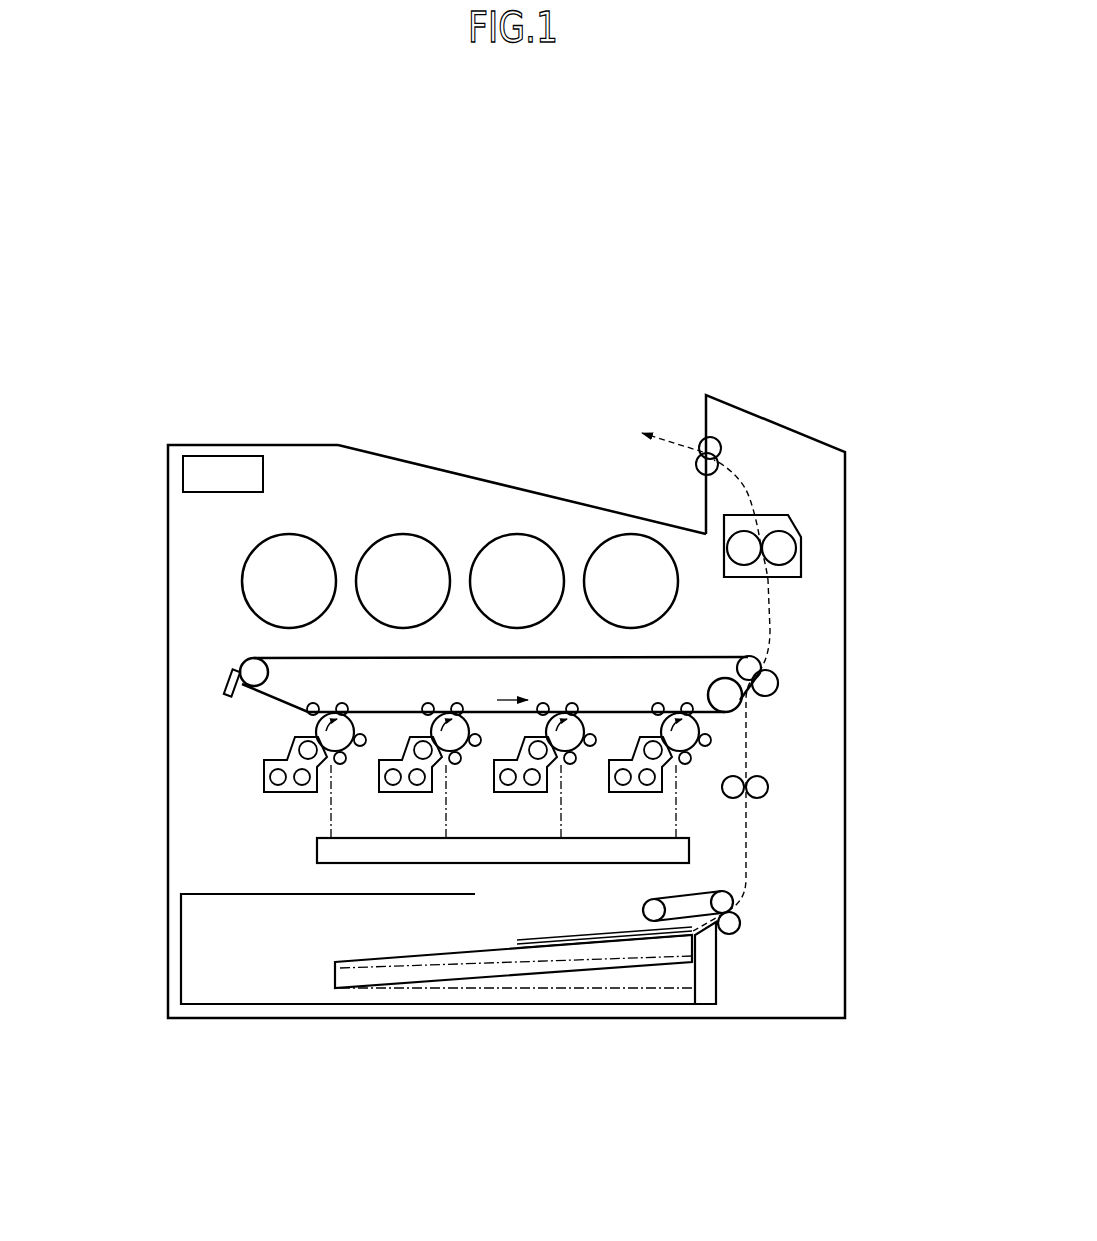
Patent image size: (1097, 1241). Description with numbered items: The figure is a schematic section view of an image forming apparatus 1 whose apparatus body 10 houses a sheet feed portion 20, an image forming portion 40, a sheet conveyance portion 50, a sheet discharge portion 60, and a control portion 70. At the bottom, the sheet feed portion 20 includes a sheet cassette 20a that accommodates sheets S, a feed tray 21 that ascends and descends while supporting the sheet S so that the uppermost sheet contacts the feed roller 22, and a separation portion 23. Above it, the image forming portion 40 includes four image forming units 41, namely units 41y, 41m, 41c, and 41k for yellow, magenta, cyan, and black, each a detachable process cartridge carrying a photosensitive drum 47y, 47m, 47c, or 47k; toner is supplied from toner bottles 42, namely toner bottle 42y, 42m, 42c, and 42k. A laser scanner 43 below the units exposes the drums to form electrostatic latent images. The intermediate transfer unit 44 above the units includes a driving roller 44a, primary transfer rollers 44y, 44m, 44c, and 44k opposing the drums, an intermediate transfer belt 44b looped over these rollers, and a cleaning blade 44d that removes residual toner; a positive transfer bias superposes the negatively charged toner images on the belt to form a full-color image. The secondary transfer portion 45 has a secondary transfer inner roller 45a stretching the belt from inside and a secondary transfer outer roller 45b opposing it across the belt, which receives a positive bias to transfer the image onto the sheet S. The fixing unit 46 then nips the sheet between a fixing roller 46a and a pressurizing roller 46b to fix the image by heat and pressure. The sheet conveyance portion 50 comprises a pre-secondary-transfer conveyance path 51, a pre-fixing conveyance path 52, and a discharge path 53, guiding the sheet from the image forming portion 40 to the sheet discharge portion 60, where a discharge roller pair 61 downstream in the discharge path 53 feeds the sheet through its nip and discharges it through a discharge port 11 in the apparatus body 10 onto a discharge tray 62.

The image forming apparatus 1 is at (748, 338).
The apparatus body 10 is at (845, 572).
The discharge port 11 is at (696, 442).
The sheet feed portion 20 is at (487, 1000).
The sheet cassette 20a is at (243, 1006).
The feed tray 21 is at (455, 962).
The feed roller 22 is at (642, 910).
The separation portion 23 is at (742, 952).
The sheet S is at (560, 938).
The image forming portion 40 is at (438, 680).
The image forming units 41 is at (449, 763).
The image forming unit 41y is at (327, 756).
The image forming unit 41m is at (444, 756).
The image forming unit 41c is at (555, 756).
The image forming unit 41k is at (661, 756).
The toner bottles 42 is at (397, 568).
The toner bottle 42y is at (270, 540).
The toner bottle 42m is at (382, 540).
The toner bottle 42c is at (497, 540).
The toner bottle 42k is at (609, 540).
The laser scanner 43 is at (317, 848).
The intermediate transfer unit 44 is at (438, 682).
The driving roller 44a is at (243, 663).
The intermediate transfer belt 44b is at (517, 656).
The cleaning blade 44d is at (229, 694).
The primary transfer roller 44y is at (340, 702).
The primary transfer roller 44m is at (455, 702).
The primary transfer roller 44c is at (570, 702).
The primary transfer roller 44k is at (685, 702).
The secondary transfer portion 45 is at (784, 681).
The secondary transfer inner roller 45a is at (746, 656).
The secondary transfer outer roller 45b is at (771, 696).
The fixing unit 46 is at (800, 564).
The fixing roller 46a is at (744, 566).
The pressurizing roller 46b is at (779, 566).
The photosensitive drum 47y is at (355, 720).
The photosensitive drum 47m is at (470, 720).
The photosensitive drum 47c is at (585, 720).
The photosensitive drum 47k is at (685, 720).
The sheet conveyance portion 50 is at (793, 695).
The pre-secondary-transfer conveyance path 51 is at (749, 752).
The pre-fixing conveyance path 52 is at (770, 656).
The discharge path 53 is at (749, 490).
The sheet discharge portion 60 is at (556, 437).
The discharge roller pair 61 is at (721, 446).
The discharge tray 62 is at (545, 488).
The control portion 70 is at (222, 456).